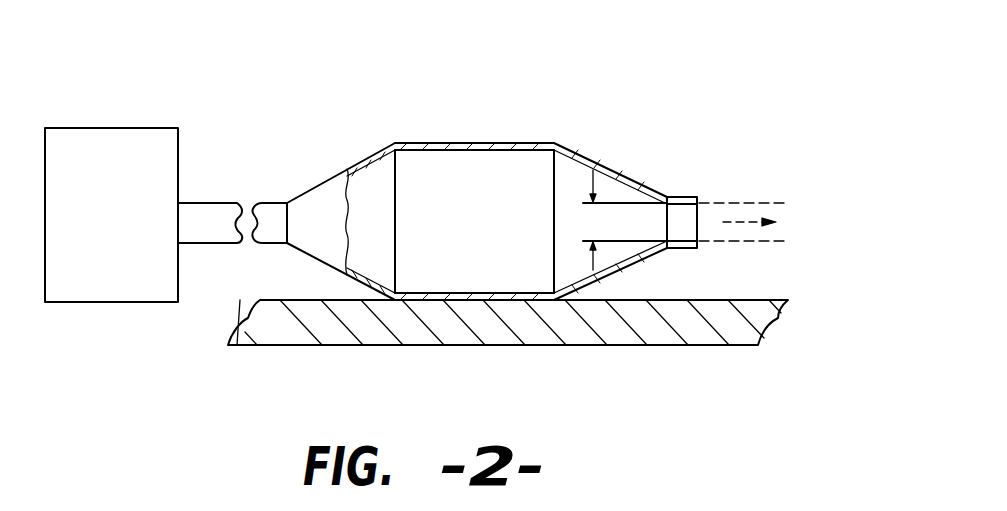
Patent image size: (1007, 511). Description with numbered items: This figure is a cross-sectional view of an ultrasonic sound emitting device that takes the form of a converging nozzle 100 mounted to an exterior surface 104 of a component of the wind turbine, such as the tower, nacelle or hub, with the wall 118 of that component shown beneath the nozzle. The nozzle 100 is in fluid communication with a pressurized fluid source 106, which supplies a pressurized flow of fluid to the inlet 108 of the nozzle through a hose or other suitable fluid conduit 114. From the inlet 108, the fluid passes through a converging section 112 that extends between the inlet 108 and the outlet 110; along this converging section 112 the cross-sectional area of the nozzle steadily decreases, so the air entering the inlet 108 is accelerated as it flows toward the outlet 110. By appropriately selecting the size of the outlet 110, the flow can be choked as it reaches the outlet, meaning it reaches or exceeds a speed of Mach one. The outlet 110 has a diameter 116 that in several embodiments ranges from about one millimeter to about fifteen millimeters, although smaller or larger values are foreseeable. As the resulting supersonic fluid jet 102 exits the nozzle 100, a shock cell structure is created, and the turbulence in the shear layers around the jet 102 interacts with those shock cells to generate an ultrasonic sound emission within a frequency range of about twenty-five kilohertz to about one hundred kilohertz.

The converging nozzle 100 is at (660, 81).
The fluid jet 102 is at (738, 202).
The exterior surface 104 is at (512, 326).
The pressurized fluid source 106 is at (130, 220).
The inlet 108 is at (393, 164).
The outlet 110 is at (699, 202).
The converging section 112 is at (673, 190).
The fluid conduit 114 is at (212, 214).
The diameter 116 is at (580, 157).
The wall 118 is at (664, 337).